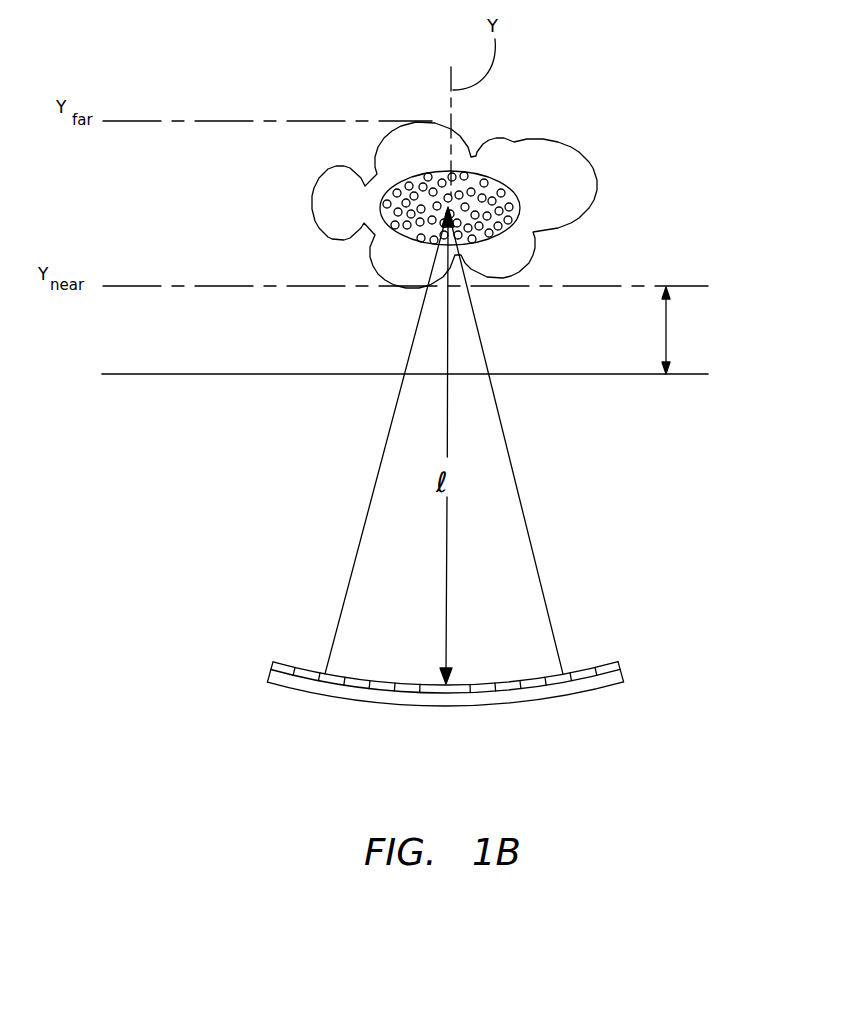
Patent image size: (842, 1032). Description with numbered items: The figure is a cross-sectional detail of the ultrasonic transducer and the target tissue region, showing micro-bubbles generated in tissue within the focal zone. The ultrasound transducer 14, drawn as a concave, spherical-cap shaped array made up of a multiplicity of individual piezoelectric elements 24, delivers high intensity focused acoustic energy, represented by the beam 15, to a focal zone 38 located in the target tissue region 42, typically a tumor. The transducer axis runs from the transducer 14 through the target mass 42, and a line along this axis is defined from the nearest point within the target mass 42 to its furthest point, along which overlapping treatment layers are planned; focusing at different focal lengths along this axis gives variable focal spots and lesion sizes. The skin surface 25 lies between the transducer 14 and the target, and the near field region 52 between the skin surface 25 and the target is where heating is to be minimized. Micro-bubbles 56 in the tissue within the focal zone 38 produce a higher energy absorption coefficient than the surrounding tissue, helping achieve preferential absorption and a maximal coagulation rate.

The ultrasound transducer 14 is at (445, 685).
The beam 15 is at (526, 512).
The piezoelectric elements 24 is at (533, 678).
The skin surface 25 is at (177, 374).
The focal zone 38 is at (508, 160).
The target tissue region 42 is at (515, 140).
The near field region 52 is at (668, 331).
The micro-bubbles 56 is at (427, 183).